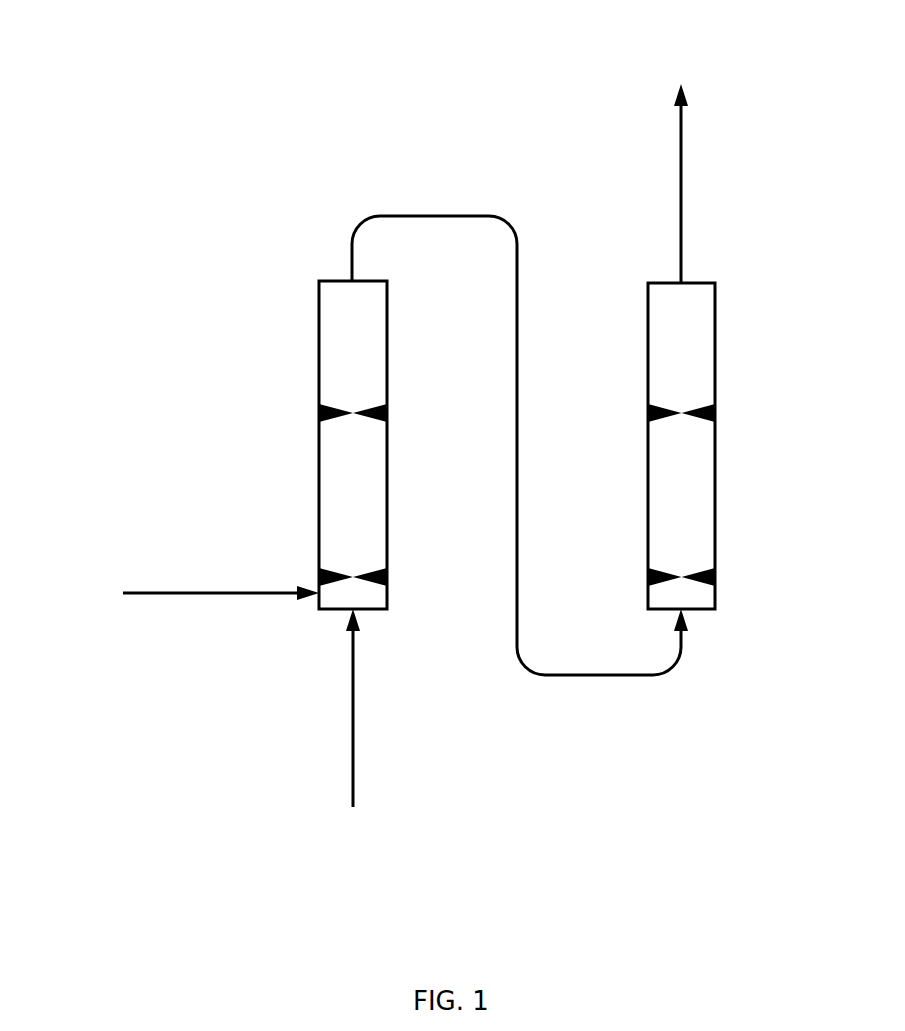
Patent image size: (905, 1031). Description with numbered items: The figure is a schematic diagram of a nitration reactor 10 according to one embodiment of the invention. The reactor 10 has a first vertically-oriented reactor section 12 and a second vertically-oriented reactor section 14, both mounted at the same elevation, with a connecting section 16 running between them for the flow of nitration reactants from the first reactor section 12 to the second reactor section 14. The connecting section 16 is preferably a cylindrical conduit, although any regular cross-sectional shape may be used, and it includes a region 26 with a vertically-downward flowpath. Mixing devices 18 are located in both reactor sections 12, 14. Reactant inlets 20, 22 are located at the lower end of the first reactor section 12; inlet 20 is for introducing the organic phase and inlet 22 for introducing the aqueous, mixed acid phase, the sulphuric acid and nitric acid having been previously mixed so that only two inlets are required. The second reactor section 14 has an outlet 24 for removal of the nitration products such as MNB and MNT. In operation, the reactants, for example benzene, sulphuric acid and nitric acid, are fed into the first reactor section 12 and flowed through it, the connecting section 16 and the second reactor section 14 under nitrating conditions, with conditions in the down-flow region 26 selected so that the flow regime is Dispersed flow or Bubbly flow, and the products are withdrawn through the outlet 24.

The nitration reactor 10 is at (522, 121).
The first vertically-oriented reactor section 12 is at (348, 325).
The second vertically-oriented reactor section 14 is at (715, 360).
The connecting section 16 is at (434, 216).
The mixing devices 18 is at (345, 418).
The reactant inlet 20 is at (220, 593).
The reactant inlet 22 is at (353, 700).
The outlet 24 is at (681, 183).
The down-flow region 26 is at (519, 448).